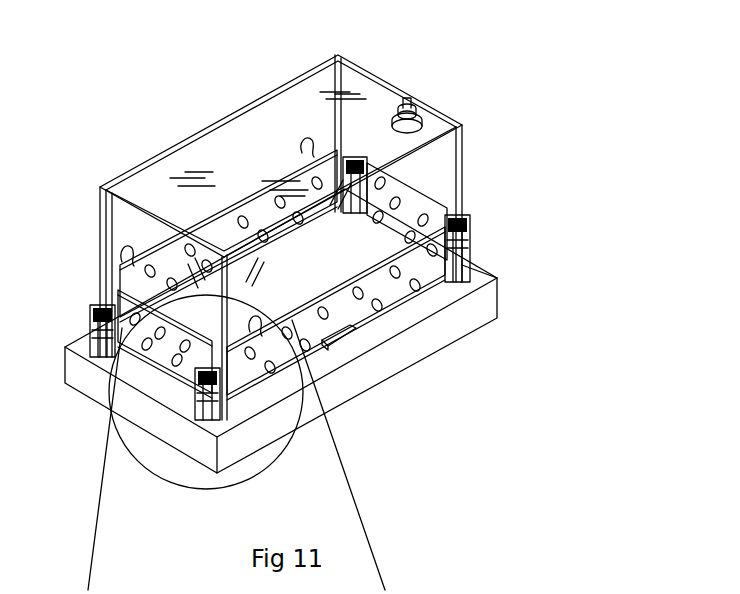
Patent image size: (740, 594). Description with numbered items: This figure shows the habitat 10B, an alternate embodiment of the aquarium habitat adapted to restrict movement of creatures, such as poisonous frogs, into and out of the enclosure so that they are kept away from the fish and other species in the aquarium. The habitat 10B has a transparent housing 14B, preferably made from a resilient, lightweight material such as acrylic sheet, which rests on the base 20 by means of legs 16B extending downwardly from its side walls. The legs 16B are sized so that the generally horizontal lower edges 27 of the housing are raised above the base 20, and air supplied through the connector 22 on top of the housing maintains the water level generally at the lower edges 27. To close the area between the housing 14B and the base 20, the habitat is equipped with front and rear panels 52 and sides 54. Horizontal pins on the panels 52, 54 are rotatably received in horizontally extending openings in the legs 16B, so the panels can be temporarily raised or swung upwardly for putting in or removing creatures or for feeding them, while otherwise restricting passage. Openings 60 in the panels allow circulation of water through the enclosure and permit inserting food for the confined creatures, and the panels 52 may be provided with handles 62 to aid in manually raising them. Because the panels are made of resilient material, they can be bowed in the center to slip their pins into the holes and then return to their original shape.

The habitat 10B is at (300, 275).
The housing 14B is at (464, 170).
The legs 16B is at (463, 187).
The base 20 is at (345, 408).
The connector 22 is at (412, 112).
The lower edges 27 is at (363, 168).
The front and rear panels 52 is at (120, 246).
The sides 54 is at (458, 217).
The openings 60 is at (417, 291).
The handles 62 is at (342, 340).